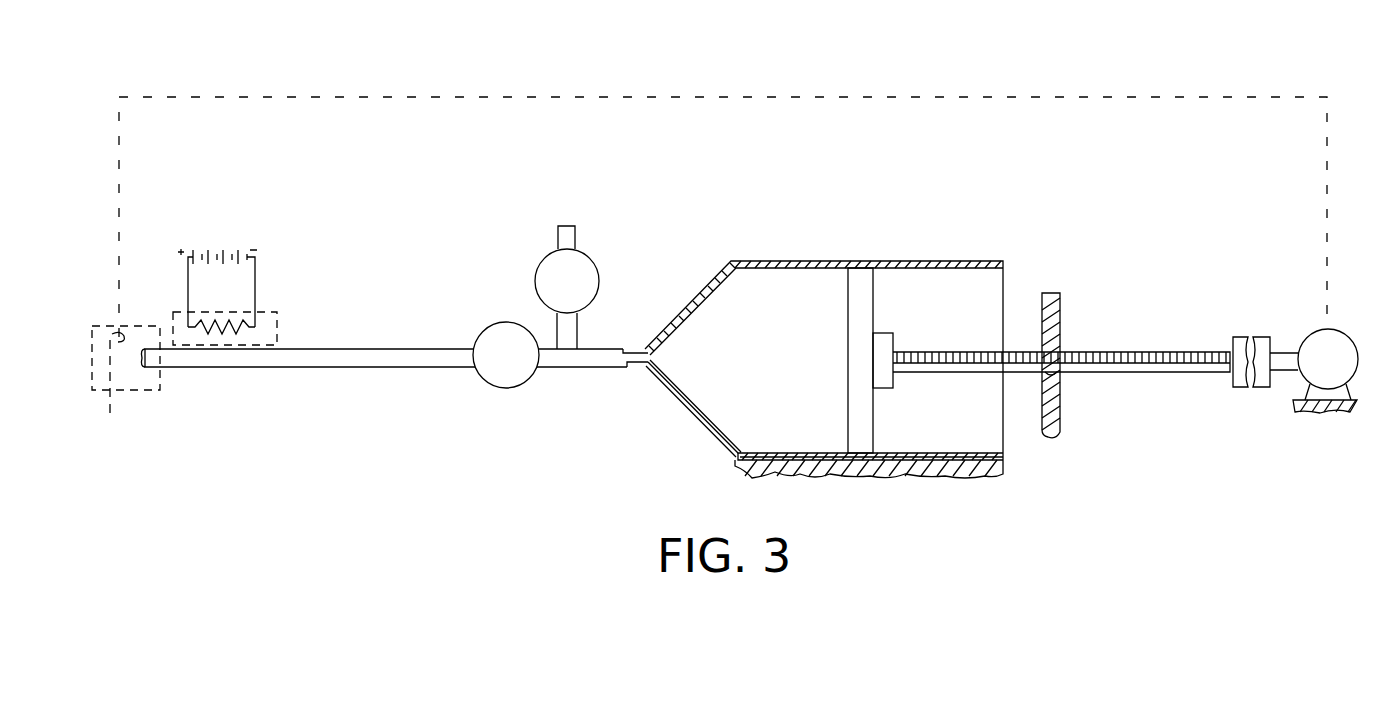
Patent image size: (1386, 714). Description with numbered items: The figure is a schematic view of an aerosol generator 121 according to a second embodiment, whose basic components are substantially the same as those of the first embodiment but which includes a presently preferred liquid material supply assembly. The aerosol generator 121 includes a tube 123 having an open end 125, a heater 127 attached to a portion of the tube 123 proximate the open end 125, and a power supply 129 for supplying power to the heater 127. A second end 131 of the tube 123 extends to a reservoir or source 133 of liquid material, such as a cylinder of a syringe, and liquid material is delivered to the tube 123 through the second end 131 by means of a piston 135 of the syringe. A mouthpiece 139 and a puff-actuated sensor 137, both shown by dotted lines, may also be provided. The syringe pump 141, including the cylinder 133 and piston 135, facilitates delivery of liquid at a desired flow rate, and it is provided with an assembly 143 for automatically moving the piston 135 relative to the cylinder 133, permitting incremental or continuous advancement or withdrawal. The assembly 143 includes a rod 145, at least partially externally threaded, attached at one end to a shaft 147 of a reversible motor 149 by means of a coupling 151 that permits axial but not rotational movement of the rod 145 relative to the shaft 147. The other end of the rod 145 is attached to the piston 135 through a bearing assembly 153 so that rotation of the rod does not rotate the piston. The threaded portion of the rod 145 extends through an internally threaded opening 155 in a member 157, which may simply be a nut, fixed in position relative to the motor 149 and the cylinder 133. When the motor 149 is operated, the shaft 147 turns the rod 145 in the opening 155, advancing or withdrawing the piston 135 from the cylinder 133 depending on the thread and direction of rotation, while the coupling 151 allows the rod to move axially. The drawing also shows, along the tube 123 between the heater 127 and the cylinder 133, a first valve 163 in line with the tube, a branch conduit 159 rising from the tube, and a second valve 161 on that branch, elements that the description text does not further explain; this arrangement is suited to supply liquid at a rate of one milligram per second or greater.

The aerosol generator 121 is at (413, 65).
The tube 123 is at (303, 368).
The open end 125 is at (140, 367).
The heater 127 is at (257, 328).
The power supply 129 is at (233, 250).
The second end 131 is at (453, 362).
The reservoir or source of liquid material 133 is at (802, 260).
The piston 135 is at (863, 297).
The puff-actuated sensor 137 is at (112, 392).
The mouthpiece 139 is at (88, 317).
The syringe pump 141 is at (938, 208).
The assembly for automatically moving the piston 143 is at (1158, 343).
The rod 145 is at (1137, 372).
The shaft 147 is at (1285, 352).
The reversible motor 149 is at (1343, 328).
The coupling 151 is at (1258, 388).
The bearing assembly 153 is at (892, 332).
The internally threaded opening 155 is at (1060, 373).
The member 157 is at (1060, 307).
The branch conduit 159 is at (578, 327).
The valve 161 is at (597, 268).
The valve 163 is at (513, 387).